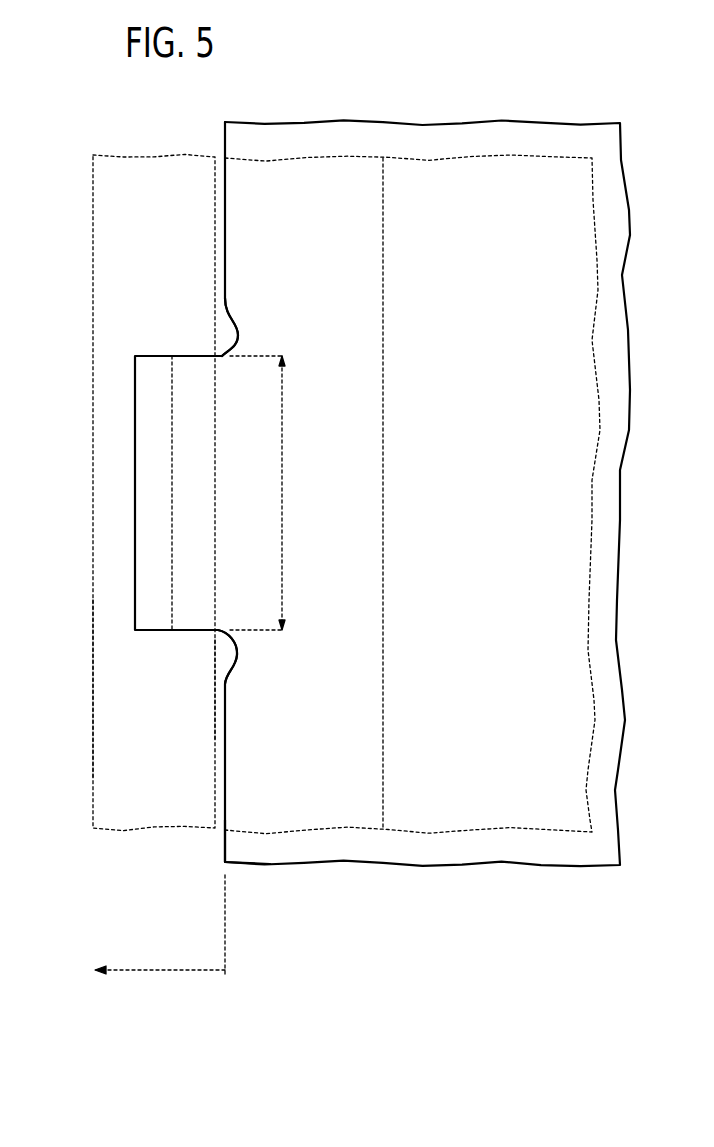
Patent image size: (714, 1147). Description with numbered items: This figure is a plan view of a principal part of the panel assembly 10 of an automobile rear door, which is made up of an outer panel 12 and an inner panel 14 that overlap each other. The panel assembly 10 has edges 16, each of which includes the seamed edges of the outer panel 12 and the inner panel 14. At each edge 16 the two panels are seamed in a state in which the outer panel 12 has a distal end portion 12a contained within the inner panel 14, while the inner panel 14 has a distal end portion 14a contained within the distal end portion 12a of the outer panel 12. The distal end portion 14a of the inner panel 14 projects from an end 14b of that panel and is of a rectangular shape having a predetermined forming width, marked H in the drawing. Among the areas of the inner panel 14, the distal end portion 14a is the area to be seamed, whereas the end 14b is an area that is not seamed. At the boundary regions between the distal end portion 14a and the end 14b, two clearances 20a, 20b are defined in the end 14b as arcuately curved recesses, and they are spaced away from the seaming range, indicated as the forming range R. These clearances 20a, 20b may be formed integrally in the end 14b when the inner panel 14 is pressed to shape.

The panel assembly 10 is at (556, 80).
The outer panel 12 is at (158, 153).
The distal end portion 12a is at (213, 690).
The inner panel 14 is at (268, 118).
The distal end portion 14a is at (190, 513).
The end 14b is at (225, 850).
The edge 16 is at (86, 685).
The clearance 20a is at (235, 655).
The clearance 20b is at (235, 330).